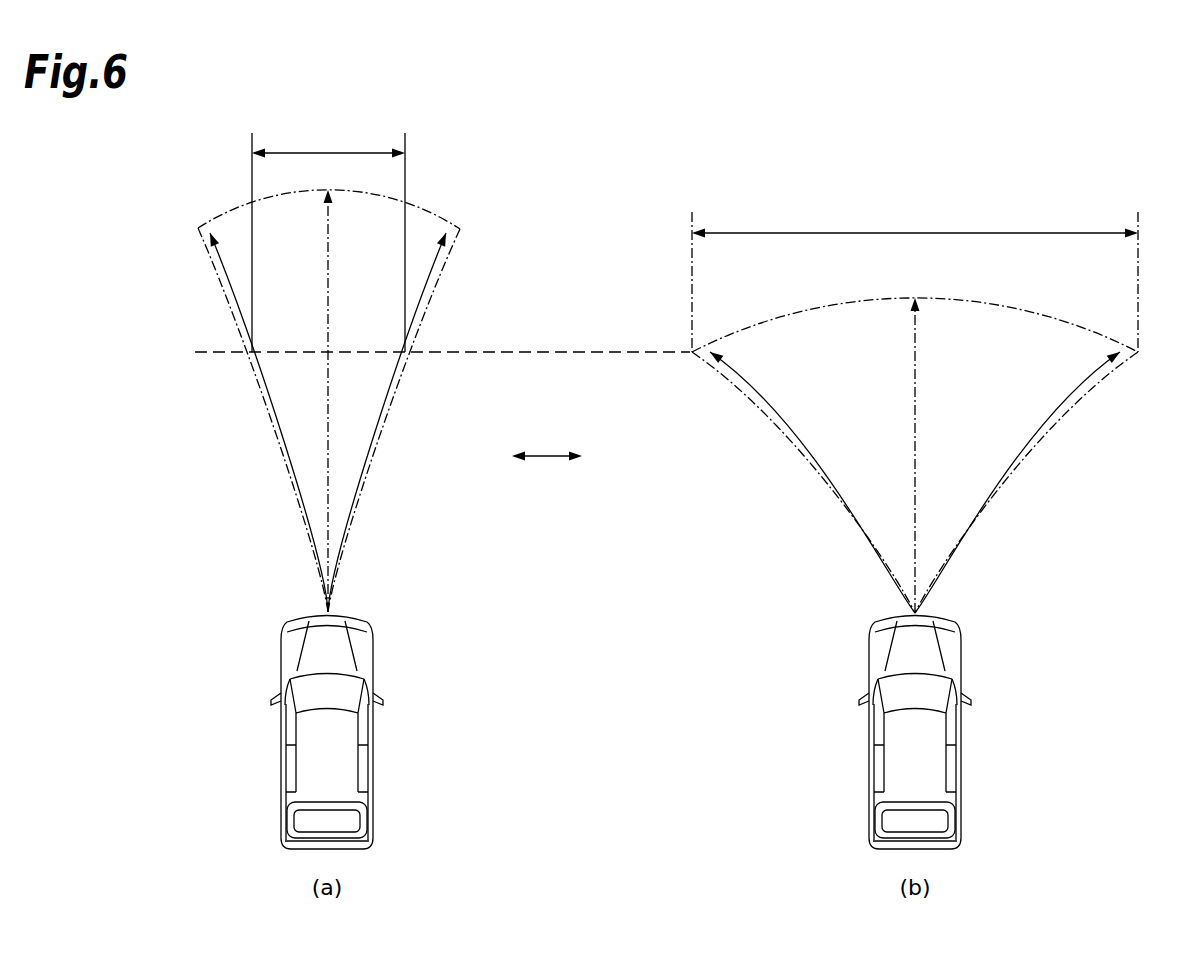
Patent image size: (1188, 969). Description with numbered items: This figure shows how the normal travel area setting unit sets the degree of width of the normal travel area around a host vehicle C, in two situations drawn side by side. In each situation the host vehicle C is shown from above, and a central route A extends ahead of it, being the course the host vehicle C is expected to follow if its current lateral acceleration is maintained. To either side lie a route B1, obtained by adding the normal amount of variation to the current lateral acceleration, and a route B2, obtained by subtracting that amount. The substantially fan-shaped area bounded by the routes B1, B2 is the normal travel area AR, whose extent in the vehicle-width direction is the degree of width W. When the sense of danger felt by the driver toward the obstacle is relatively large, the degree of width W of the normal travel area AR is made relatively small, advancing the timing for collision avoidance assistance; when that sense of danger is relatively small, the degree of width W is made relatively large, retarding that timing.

The degree of width W is at (695, 238).
The normal travel area AR is at (423, 209).
The route B1 is at (440, 262).
The route B2 is at (222, 268).
The route A is at (330, 440).
The host vehicle C is at (374, 768).